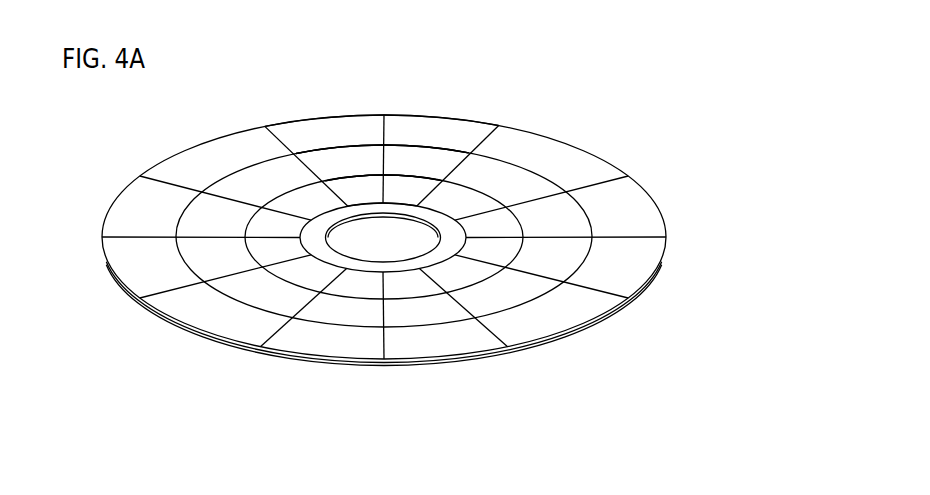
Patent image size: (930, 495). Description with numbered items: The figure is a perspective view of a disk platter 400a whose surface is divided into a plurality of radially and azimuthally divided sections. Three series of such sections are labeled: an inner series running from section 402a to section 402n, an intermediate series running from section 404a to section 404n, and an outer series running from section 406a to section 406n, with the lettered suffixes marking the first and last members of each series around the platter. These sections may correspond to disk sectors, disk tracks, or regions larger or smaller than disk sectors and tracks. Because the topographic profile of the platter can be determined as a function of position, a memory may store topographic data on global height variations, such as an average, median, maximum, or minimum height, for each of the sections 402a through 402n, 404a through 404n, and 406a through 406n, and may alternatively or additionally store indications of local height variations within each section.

The disk platter 400a is at (458, 387).
The section 402a is at (463, 185).
The section 402n is at (343, 192).
The section 404a is at (422, 162).
The section 404n is at (340, 162).
The section 406a is at (403, 133).
The section 406n is at (360, 133).